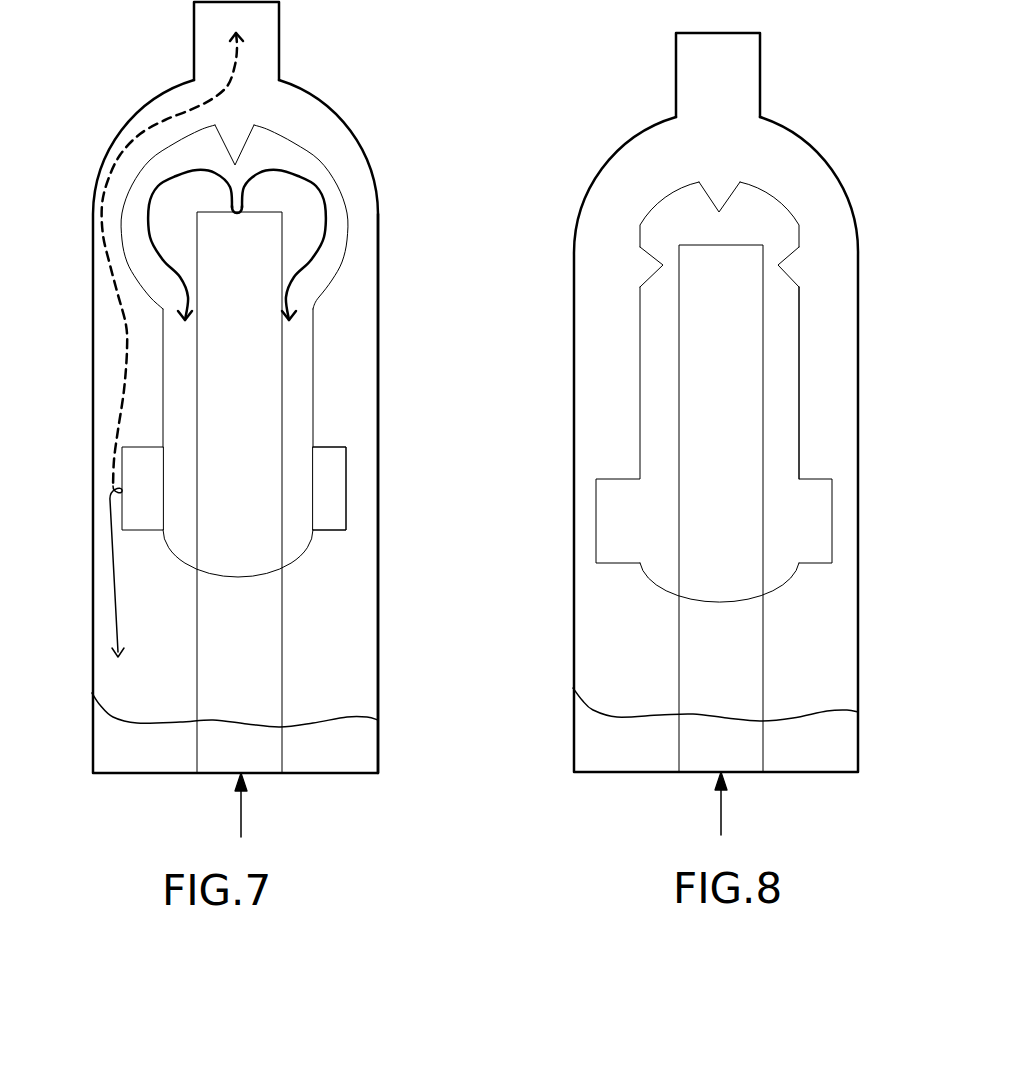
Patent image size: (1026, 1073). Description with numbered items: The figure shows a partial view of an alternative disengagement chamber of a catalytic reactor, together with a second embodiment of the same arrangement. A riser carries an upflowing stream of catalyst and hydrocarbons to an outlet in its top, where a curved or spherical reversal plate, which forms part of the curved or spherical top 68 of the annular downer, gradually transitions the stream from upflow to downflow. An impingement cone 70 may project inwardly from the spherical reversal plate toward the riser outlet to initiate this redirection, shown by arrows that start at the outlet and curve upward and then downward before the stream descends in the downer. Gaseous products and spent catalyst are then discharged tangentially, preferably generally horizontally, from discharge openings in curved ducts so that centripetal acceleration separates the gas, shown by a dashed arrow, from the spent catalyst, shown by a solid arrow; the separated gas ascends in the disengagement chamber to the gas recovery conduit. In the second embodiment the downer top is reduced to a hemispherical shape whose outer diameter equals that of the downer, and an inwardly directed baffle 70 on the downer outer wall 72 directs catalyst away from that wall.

In FIG. 7, the curved or spherical top 68 is at (328, 175).
In FIG. 7, the impingement cone 70 is at (230, 143).
In FIG. 8, the impingement cone 70 is at (790, 250).
In FIG. 8, the outer wall 72 is at (798, 315).